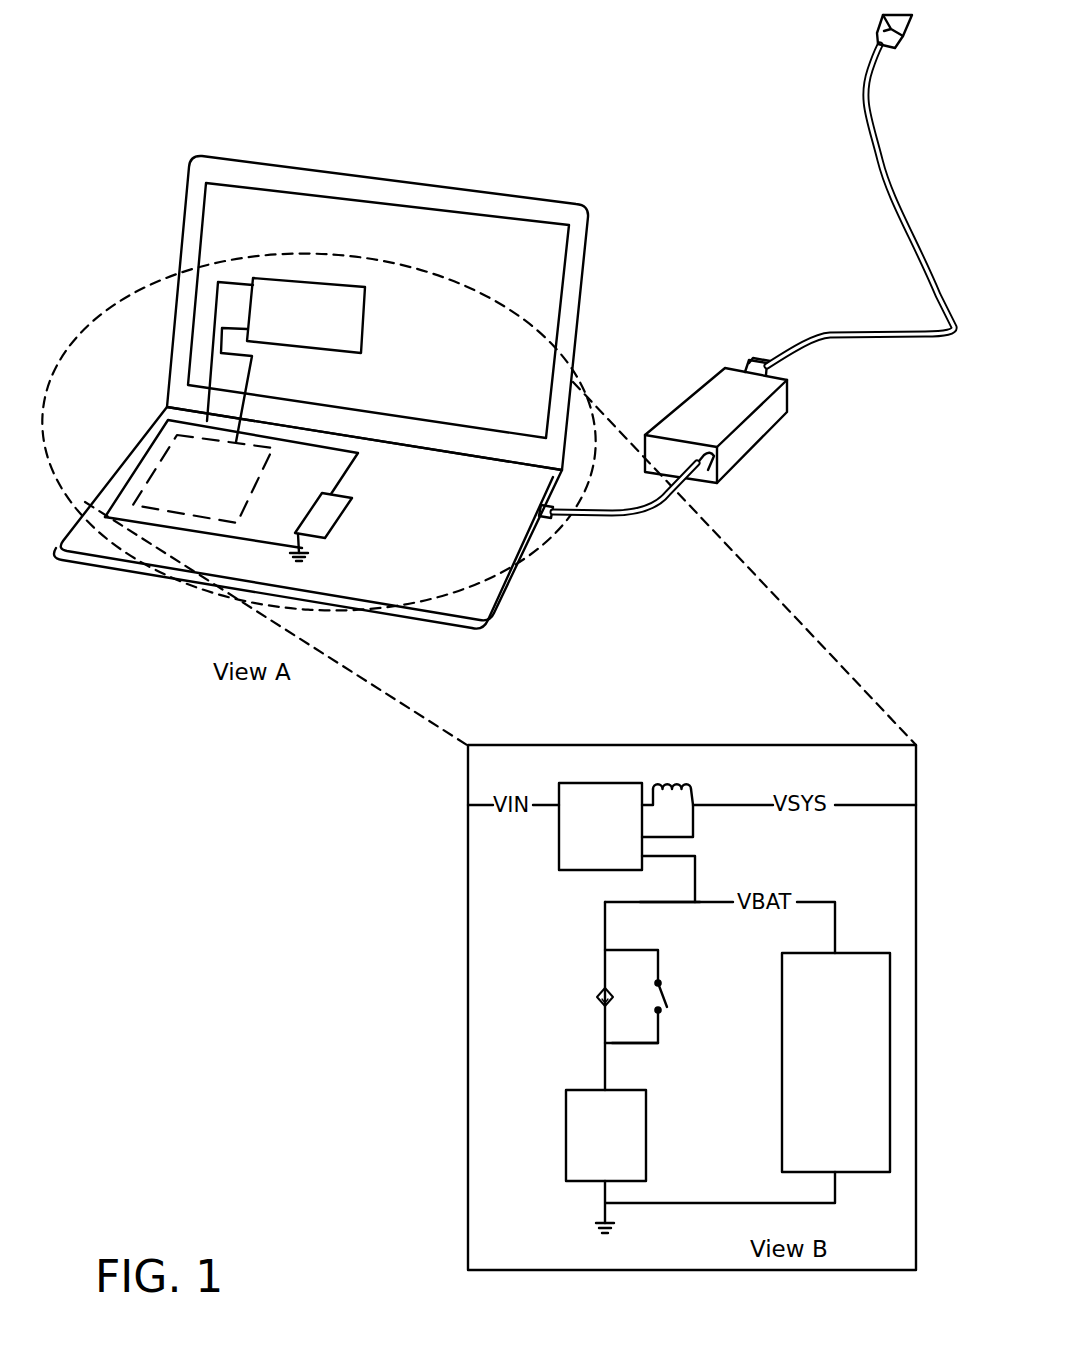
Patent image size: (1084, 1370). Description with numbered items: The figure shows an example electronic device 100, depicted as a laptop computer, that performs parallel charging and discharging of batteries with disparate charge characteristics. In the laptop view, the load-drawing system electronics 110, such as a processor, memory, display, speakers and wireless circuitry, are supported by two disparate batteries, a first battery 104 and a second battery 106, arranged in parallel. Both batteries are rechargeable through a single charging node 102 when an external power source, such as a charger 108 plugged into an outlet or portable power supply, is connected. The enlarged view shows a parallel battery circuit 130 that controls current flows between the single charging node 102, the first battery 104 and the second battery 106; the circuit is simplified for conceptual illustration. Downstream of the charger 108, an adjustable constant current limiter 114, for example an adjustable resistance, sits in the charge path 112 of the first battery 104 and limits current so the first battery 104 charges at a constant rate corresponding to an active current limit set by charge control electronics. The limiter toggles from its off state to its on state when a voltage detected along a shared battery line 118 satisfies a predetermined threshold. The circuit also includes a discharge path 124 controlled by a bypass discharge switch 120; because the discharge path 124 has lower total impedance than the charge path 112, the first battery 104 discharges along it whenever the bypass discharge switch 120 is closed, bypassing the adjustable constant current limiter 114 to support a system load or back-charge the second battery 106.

The electronic device 100 is at (182, 80).
The single charging node 102 is at (548, 520).
The first battery 104 is at (338, 530).
The second battery 106 is at (288, 325).
The charger 108 is at (699, 417).
The load-drawing system electronics 110 is at (185, 491).
The charge path 112 is at (605, 962).
The adjustable constant current limiter 114 is at (597, 996).
The shared battery line 118 is at (657, 902).
The bypass discharge switch 120 is at (665, 993).
The discharge path 124 is at (640, 1045).
The parallel battery circuit 130 is at (765, 745).